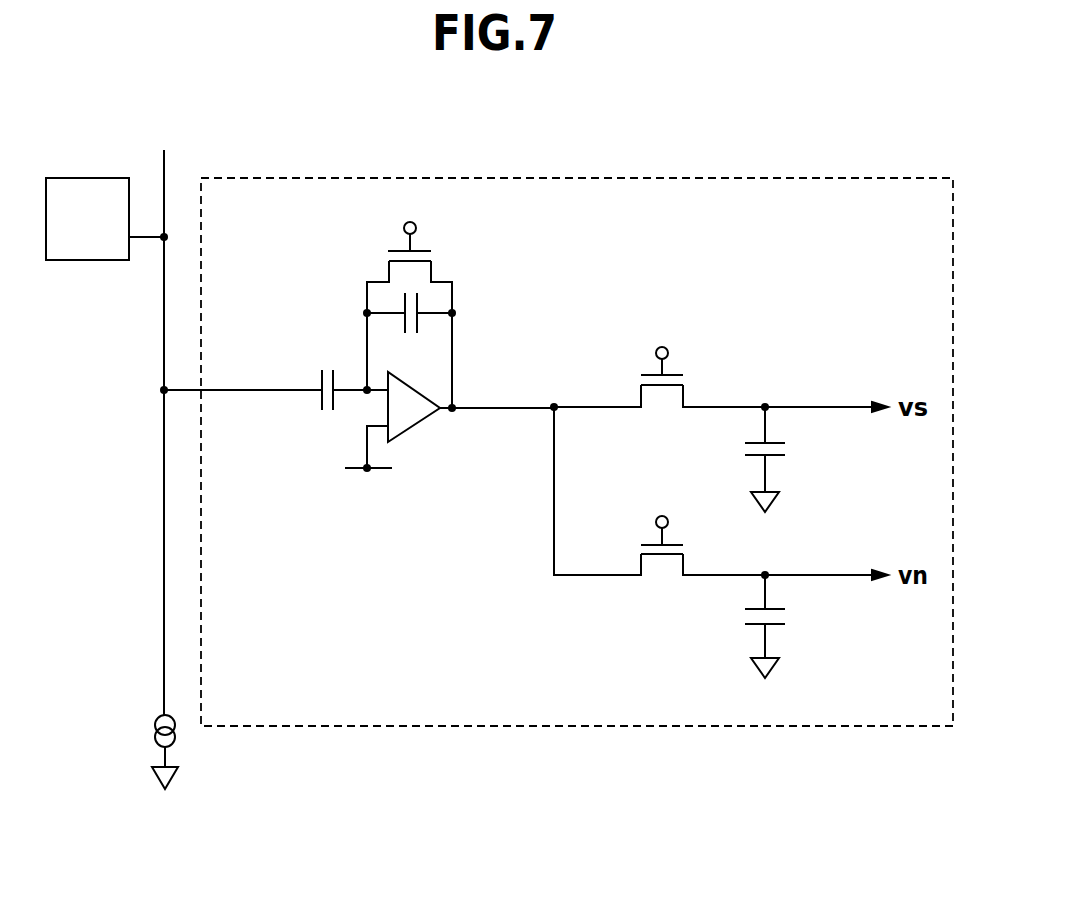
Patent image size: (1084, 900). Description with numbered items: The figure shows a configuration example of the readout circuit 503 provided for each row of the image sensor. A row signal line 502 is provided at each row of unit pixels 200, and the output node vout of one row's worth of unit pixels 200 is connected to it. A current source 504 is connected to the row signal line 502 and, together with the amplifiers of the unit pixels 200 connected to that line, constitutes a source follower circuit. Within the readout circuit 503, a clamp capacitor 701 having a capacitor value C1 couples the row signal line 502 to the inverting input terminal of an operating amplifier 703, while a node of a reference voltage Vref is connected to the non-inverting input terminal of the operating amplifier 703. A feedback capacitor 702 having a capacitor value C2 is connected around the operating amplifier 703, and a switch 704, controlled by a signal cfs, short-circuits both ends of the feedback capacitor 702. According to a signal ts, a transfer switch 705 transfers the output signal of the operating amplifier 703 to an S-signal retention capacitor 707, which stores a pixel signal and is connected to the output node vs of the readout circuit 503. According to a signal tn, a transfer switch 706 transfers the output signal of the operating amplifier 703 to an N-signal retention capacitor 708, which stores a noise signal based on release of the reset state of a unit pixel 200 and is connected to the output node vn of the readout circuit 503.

The unit pixel 200 is at (85, 262).
The row signal line 502 is at (164, 157).
The readout circuit 503 is at (868, 176).
The current source 504 is at (152, 740).
The clamp capacitor 701 is at (328, 413).
The feedback capacitor 702 is at (420, 300).
The operating amplifier 703 is at (415, 426).
The switch 704 is at (436, 255).
The transfer switch 705 is at (660, 410).
The transfer switch 706 is at (660, 578).
The S-signal retention capacitor 707 is at (788, 450).
The N-signal retention capacitor 708 is at (788, 618).